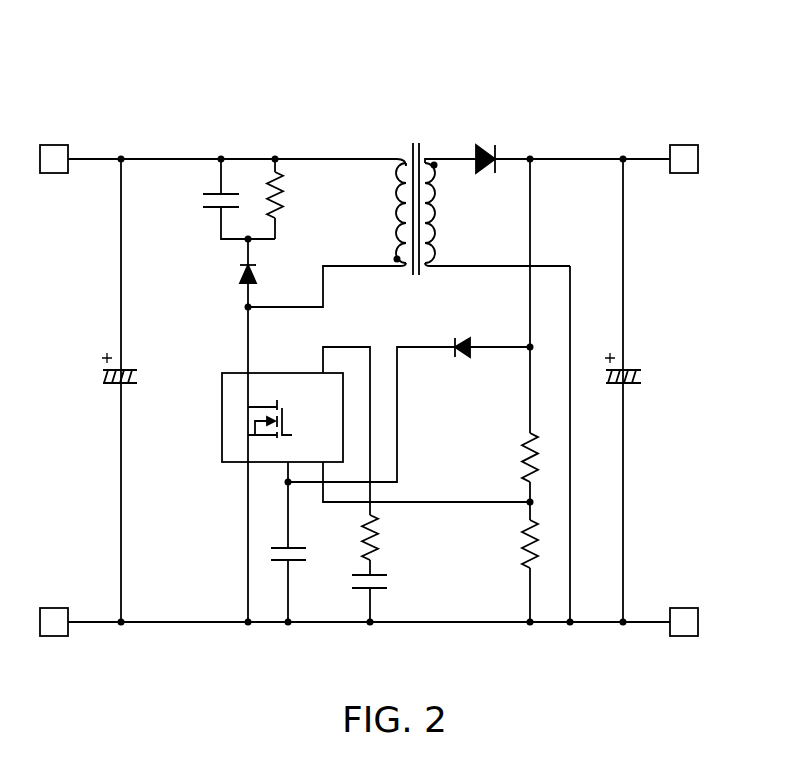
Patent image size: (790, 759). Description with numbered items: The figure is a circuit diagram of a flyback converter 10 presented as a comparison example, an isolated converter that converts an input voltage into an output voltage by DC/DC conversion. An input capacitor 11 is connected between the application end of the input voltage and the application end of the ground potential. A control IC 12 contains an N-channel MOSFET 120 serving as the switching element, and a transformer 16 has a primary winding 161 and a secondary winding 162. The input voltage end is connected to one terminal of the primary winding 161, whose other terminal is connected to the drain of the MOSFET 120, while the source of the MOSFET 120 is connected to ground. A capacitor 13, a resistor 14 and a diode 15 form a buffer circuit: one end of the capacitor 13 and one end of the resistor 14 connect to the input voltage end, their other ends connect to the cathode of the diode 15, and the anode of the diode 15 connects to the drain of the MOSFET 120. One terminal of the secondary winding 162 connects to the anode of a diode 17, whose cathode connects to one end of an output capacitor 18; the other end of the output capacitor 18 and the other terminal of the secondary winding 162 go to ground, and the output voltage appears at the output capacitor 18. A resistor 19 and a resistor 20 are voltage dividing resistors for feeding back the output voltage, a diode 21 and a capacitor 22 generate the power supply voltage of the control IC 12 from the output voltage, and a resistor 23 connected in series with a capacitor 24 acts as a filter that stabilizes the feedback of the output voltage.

The flyback converter 10 is at (607, 72).
The input capacitor 11 is at (137, 378).
The control IC 12 is at (228, 373).
The MOSFET 120 is at (250, 418).
The capacitor 13 is at (203, 200).
The resistor 14 is at (285, 188).
The diode 15 is at (257, 276).
The transformer 16 is at (413, 143).
The primary winding 161 is at (397, 220).
The secondary winding 162 is at (437, 217).
The diode 17 is at (489, 145).
The output capacitor 18 is at (660, 370).
The resistor 19 is at (522, 455).
The resistor 20 is at (522, 545).
The diode 21 is at (458, 338).
The capacitor 22 is at (306, 556).
The resistor 23 is at (385, 528).
The capacitor 24 is at (390, 579).